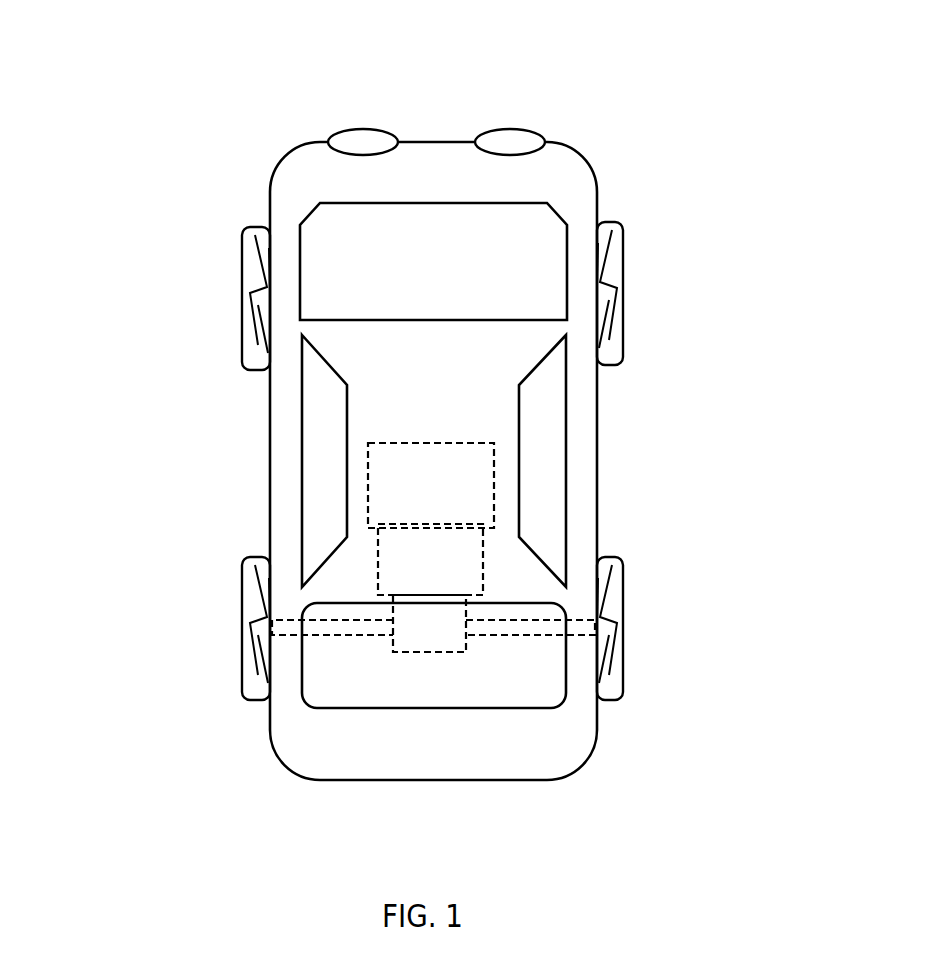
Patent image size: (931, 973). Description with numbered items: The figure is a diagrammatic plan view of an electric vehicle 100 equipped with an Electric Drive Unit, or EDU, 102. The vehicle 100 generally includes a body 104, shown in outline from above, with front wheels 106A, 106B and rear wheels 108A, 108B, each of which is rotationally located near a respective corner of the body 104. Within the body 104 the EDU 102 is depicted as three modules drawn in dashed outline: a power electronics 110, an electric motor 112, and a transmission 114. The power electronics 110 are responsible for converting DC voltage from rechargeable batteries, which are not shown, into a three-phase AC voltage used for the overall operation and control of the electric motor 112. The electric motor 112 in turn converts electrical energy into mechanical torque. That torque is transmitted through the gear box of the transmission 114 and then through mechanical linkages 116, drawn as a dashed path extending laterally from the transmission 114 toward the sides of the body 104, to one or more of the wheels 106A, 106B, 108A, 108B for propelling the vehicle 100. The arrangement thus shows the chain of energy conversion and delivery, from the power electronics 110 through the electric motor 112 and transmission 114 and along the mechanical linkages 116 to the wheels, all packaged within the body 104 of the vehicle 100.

The electric vehicle 100 is at (630, 131).
The electric drive unit 102 is at (506, 558).
The body 104 is at (586, 393).
The front wheel 106A is at (250, 258).
The front wheel 106B is at (618, 273).
The rear wheel 108A is at (247, 597).
The rear wheel 108B is at (618, 618).
The power electronics 110 is at (405, 492).
The electric motor 112 is at (395, 563).
The transmission 114 is at (417, 627).
The mechanical linkages 116 is at (513, 627).